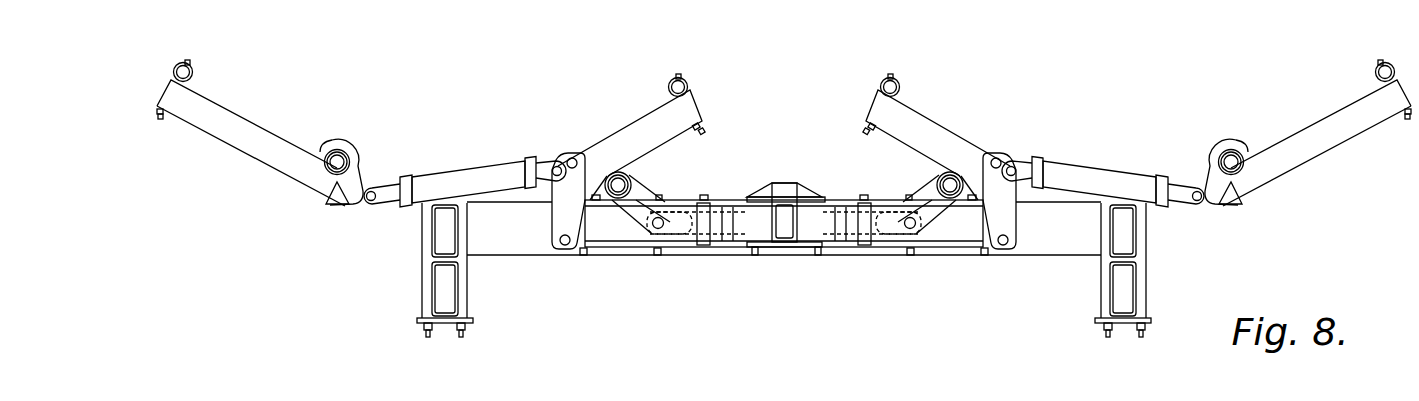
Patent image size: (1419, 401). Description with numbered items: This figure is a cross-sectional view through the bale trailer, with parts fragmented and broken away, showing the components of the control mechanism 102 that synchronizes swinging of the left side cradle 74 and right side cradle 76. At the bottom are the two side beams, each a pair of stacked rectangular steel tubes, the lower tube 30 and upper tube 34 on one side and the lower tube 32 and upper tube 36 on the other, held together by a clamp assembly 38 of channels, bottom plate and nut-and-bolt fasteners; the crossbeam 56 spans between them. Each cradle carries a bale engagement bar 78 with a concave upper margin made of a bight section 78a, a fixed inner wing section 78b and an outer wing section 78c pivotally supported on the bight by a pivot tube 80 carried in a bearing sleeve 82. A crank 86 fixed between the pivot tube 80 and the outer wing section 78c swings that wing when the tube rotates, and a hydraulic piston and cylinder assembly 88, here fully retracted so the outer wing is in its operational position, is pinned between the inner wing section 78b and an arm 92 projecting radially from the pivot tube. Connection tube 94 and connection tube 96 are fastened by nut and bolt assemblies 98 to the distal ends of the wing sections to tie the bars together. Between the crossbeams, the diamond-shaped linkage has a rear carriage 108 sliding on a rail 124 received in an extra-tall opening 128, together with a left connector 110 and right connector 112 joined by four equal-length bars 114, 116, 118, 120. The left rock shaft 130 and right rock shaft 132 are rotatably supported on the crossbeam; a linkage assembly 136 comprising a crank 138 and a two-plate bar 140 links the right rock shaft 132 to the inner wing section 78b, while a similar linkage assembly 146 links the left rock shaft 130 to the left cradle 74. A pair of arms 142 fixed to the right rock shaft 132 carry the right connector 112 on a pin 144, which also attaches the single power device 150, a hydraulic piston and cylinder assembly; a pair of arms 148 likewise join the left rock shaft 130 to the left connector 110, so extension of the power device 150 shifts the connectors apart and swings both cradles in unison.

The lower tube 30 is at (1138, 231).
The lower tube 32 is at (1138, 283).
The upper tube 34 is at (430, 236).
The upper tube 36 is at (432, 293).
The clamp assembly 38 is at (450, 326).
The crossbeam 56 is at (472, 256).
The left side cradle 74 is at (1401, 62).
The right side cradle 76 is at (704, 90).
The bale engagement bar 78 is at (251, 143).
The bight section 78a is at (393, 170).
The inner wing section 78b is at (650, 112).
The outer wing section 78c is at (213, 106).
The pivot tube 80 is at (340, 149).
The bearing sleeve 82 is at (332, 203).
The crank 86 is at (324, 150).
The hydraulic piston and cylinder assembly 88 is at (487, 167).
The arm 92 is at (358, 204).
The connection tube 94 is at (687, 82).
The connection tube 96 is at (177, 64).
The nut and bolt assembly 98 is at (190, 66).
The control mechanism 102 is at (1010, 262).
The rear carriage 108 is at (773, 190).
The left connector 110 is at (958, 252).
The right connector 112 is at (602, 258).
The bar 114 is at (865, 235).
The bar 116 is at (828, 217).
The bar 118 is at (592, 228).
The bar 120 is at (742, 216).
The rail 124 is at (783, 242).
The opening 128 is at (786, 180).
The left rock shaft 130 is at (940, 173).
The right rock shaft 132 is at (631, 172).
The linkage assembly 136 is at (551, 242).
The crank 138 is at (591, 172).
The bar 140 is at (554, 215).
The arm 142 is at (643, 198).
The pin 144 is at (662, 231).
The linkage assembly 146 is at (1018, 214).
The arm 148 is at (928, 192).
The power device 150 is at (850, 244).